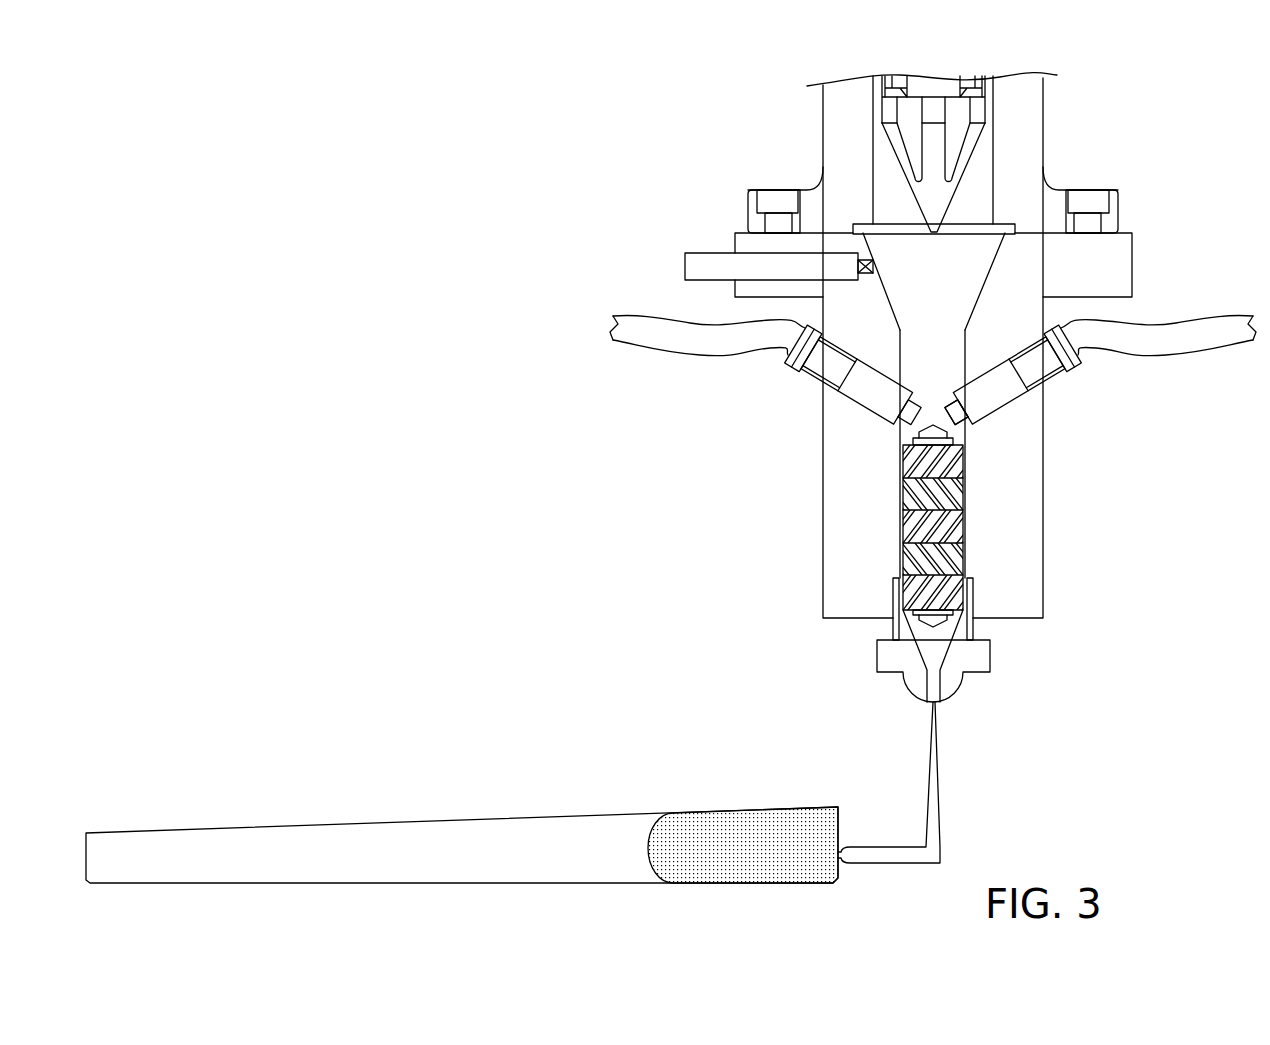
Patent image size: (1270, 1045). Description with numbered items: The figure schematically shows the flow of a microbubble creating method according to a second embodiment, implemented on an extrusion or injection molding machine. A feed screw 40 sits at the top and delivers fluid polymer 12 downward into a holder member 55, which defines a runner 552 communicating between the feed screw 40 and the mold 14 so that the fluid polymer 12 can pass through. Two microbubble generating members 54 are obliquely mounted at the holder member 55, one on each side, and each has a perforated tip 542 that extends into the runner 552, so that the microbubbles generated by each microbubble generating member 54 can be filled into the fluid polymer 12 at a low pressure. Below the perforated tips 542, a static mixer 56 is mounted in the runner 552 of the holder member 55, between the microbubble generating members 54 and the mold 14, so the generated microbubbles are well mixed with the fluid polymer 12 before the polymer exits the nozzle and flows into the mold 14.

The feed screw 40 is at (968, 167).
The runner 552 is at (965, 273).
The microbubble generating member 54 is at (805, 388).
The perforated tip 542 is at (950, 413).
The holder member 55 is at (845, 487).
The static mixer 56 is at (970, 553).
The mold 14 is at (453, 842).
The fluid polymer 12 is at (725, 832).